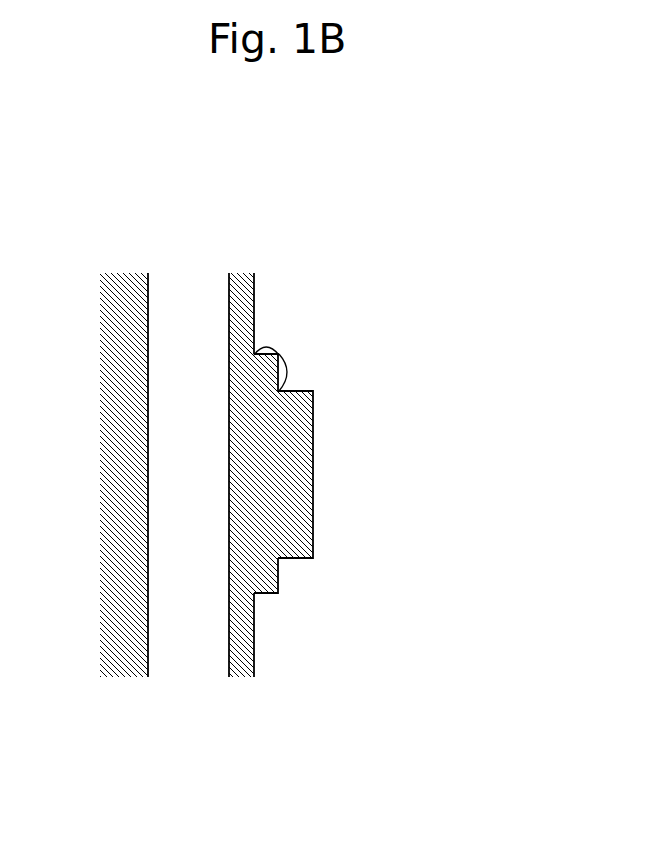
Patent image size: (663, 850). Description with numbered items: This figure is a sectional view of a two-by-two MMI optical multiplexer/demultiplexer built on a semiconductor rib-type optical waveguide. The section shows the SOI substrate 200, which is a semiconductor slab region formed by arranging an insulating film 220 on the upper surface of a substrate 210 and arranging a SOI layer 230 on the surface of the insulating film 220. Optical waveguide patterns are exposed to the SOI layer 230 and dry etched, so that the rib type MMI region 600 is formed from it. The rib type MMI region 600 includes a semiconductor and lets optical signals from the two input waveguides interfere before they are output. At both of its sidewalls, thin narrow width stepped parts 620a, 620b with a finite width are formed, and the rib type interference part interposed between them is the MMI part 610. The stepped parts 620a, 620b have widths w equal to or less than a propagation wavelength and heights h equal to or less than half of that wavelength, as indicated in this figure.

The SOI substrate 200 is at (203, 539).
The substrate 210 is at (123, 664).
The insulating film 220 is at (182, 663).
The SOI layer 230 is at (267, 509).
The rib type MMI region 600 is at (361, 460).
The MMI part 610 is at (285, 436).
The narrow width stepped part 620a is at (278, 355).
The narrow width stepped part 620b is at (324, 575).